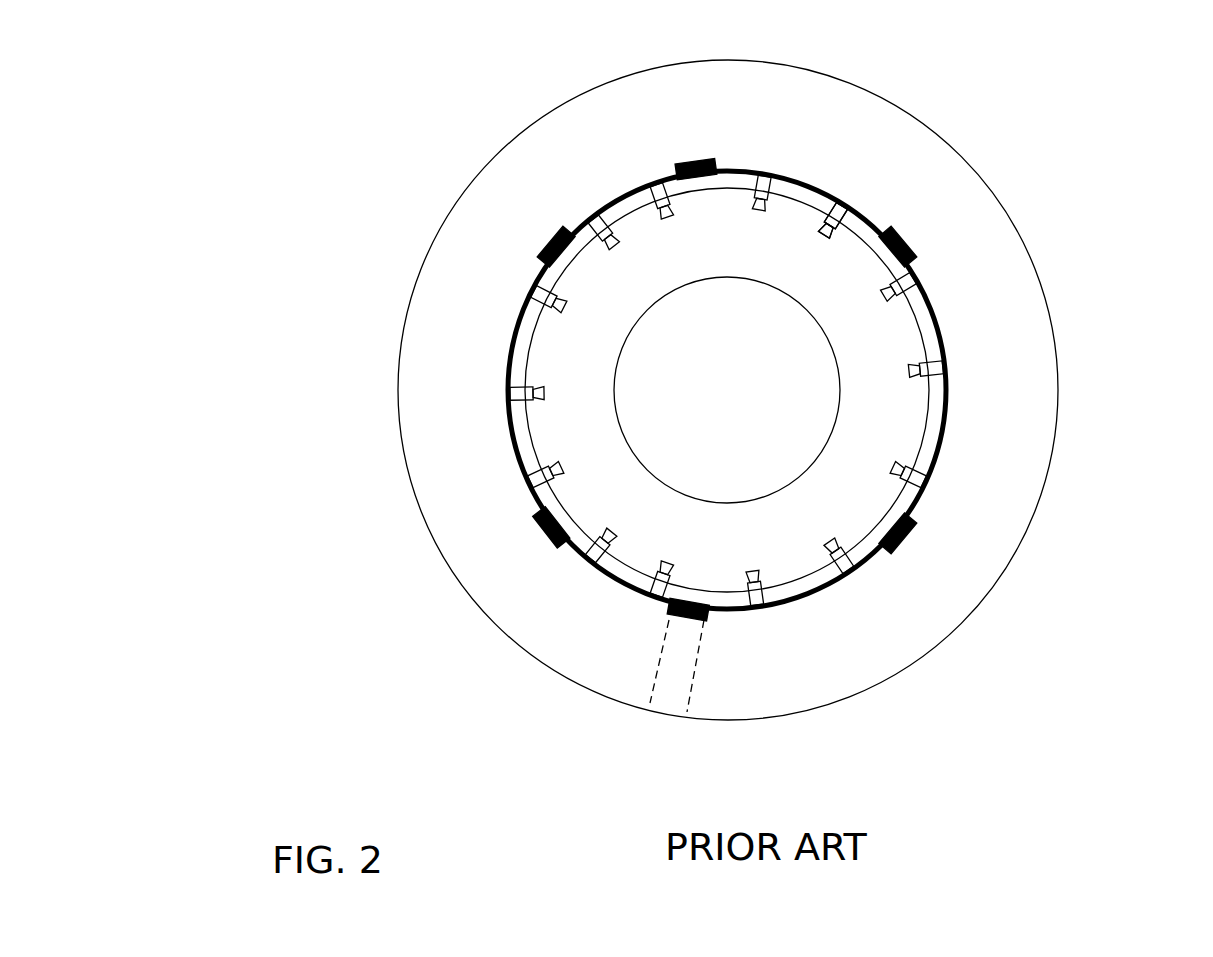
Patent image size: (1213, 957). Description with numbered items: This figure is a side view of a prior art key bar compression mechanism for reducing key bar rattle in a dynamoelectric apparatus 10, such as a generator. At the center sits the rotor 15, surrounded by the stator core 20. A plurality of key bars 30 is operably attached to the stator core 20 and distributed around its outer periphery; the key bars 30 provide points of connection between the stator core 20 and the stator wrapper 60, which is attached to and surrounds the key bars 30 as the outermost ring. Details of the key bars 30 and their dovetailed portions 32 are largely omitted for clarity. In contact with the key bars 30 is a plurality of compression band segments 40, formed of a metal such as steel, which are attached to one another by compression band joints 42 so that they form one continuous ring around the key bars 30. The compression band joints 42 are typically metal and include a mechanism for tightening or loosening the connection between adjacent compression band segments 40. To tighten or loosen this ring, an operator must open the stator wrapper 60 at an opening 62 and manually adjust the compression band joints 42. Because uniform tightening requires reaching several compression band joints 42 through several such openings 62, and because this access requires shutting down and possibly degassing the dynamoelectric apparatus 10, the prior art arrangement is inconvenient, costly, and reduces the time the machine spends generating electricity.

The dynamoelectric apparatus 10 is at (470, 97).
The rotor 15 is at (752, 397).
The stator core 20 is at (752, 240).
The key bars 30 is at (495, 410).
The dovetailed portions 32 is at (828, 230).
The compression band segments 40 is at (937, 318).
The compression band joints 42 is at (547, 530).
The stator wrapper 60 is at (737, 124).
The opening 62 is at (702, 728).